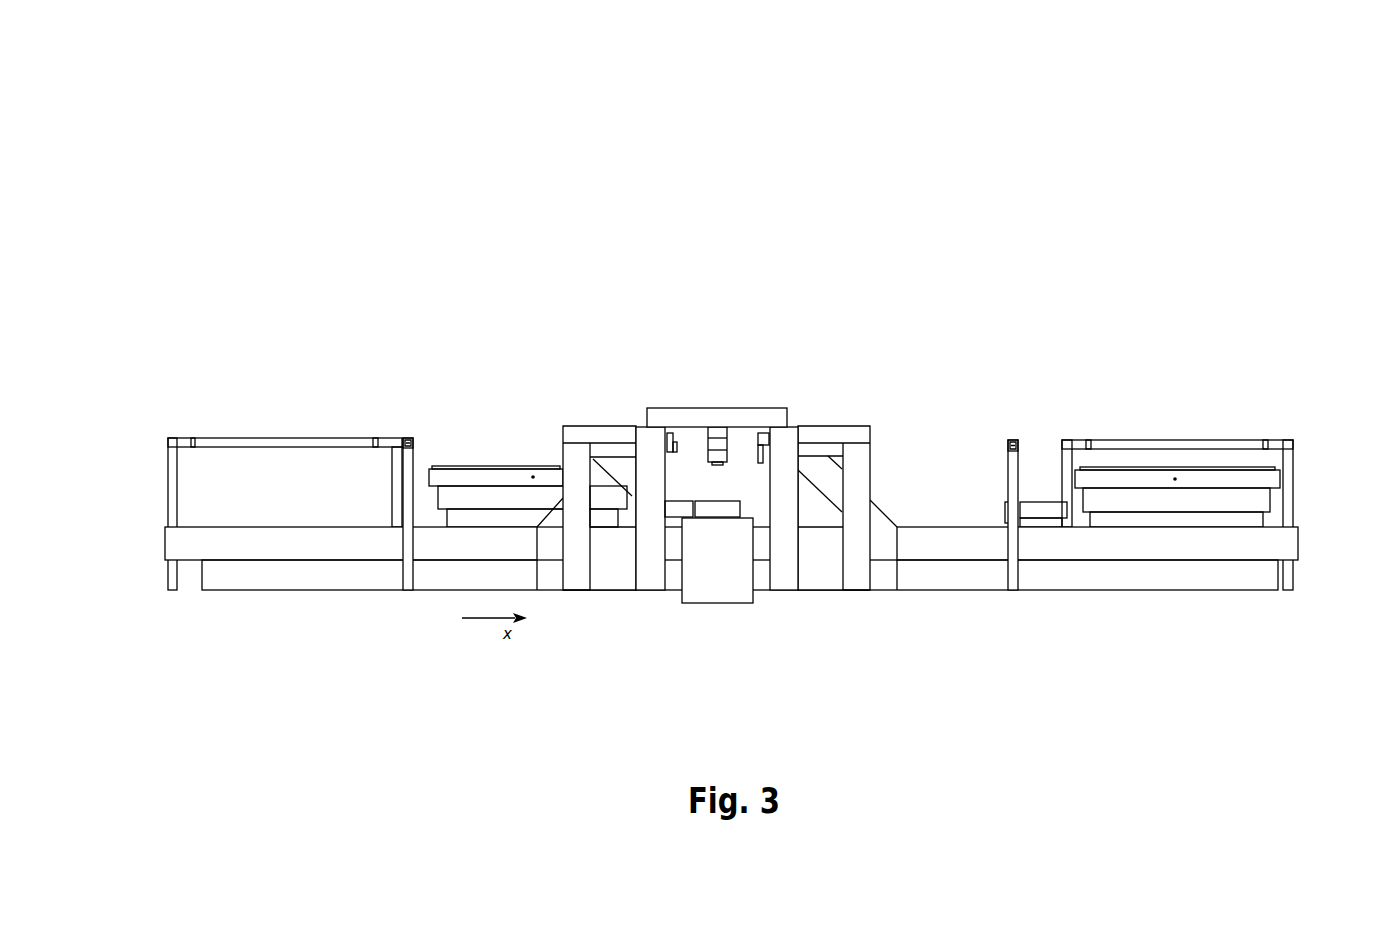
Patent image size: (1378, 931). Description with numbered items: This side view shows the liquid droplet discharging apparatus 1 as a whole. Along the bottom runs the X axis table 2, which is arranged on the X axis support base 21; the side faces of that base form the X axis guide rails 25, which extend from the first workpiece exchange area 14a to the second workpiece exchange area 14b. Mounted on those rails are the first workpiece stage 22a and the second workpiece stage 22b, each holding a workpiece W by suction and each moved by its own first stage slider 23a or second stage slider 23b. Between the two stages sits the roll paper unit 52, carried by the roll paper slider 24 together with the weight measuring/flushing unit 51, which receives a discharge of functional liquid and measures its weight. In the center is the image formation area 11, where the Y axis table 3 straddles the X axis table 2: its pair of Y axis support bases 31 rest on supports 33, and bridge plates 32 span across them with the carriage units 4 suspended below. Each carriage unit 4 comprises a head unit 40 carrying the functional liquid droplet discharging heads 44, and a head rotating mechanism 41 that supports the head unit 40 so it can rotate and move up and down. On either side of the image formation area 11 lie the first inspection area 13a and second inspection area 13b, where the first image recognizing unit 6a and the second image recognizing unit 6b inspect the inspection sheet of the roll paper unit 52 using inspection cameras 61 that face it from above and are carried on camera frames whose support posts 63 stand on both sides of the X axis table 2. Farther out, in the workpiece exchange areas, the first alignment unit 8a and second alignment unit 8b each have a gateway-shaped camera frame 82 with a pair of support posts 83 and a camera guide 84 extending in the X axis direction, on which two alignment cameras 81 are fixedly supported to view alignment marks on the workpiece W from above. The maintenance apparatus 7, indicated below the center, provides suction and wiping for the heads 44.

The liquid droplet discharging apparatus 1 is at (703, 97).
The X axis table 2 is at (689, 544).
The Y axis table 3 is at (720, 479).
The carriage unit 4 is at (717, 473).
The first image recognizing unit 6a is at (995, 369).
The second image recognizing unit 6b is at (440, 367).
The maintenance apparatus 7 is at (720, 696).
The first alignment unit 8a is at (1155, 427).
The second alignment unit 8b is at (260, 424).
The image formation area 11 is at (699, 229).
The first inspection area 13a is at (1038, 229).
The second inspection area 13b is at (448, 229).
The first workpiece exchange area 14a is at (1203, 229).
The second workpiece exchange area 14b is at (256, 229).
The X axis support base 21 is at (202, 572).
The first workpiece stage 22a is at (1280, 476).
The second workpiece stage 22b is at (433, 478).
The first stage slider 23a is at (1263, 522).
The second stage slider 23b is at (447, 520).
The roll paper slider 24 is at (1005, 523).
The X axis guide rail 25 is at (165, 542).
The Y axis support base 31 is at (610, 426).
The bridge plate 32 is at (680, 408).
The support 33 is at (582, 592).
The head unit 40 is at (727, 457).
The head rotating mechanism 41 is at (692, 440).
The functional liquid droplet discharging head 44 is at (711, 466).
The weight measuring/flushing unit 51 is at (1037, 502).
The roll paper unit 52 is at (1005, 507).
The inspection camera 61 is at (415, 437).
The support post 63 is at (408, 438).
The alignment camera 81 is at (193, 438).
The camera frame 82 is at (138, 387).
The support post 83 is at (168, 455).
The camera guide 84 is at (178, 438).
The workpiece W is at (507, 465).